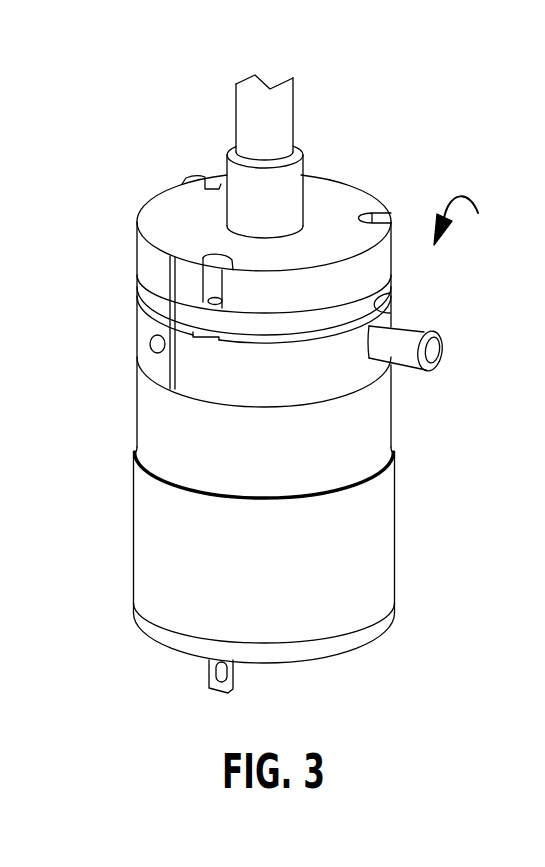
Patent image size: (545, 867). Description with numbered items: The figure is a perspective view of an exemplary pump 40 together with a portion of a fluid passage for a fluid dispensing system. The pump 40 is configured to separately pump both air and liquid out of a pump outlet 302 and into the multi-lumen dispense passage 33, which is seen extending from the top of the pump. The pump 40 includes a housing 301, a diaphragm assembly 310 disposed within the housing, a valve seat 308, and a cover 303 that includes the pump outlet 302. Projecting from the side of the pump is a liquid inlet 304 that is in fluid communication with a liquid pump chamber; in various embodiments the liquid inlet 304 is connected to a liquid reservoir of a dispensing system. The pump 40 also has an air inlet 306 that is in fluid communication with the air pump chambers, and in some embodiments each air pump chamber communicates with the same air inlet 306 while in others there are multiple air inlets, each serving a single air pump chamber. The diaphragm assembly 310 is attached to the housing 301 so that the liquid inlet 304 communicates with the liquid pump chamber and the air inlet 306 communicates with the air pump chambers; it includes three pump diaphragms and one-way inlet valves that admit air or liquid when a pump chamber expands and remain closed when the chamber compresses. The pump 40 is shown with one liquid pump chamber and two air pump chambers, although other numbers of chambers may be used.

The multi-lumen dispense passage 33 is at (282, 110).
The pump 40 is at (469, 220).
The housing 301 is at (392, 415).
The pump outlet 302 is at (287, 193).
The cover 303 is at (163, 217).
The liquid inlet 304 is at (414, 341).
The air inlet 306 is at (150, 343).
The valve seat 308 is at (150, 295).
The diaphragm assembly 310 is at (392, 294).